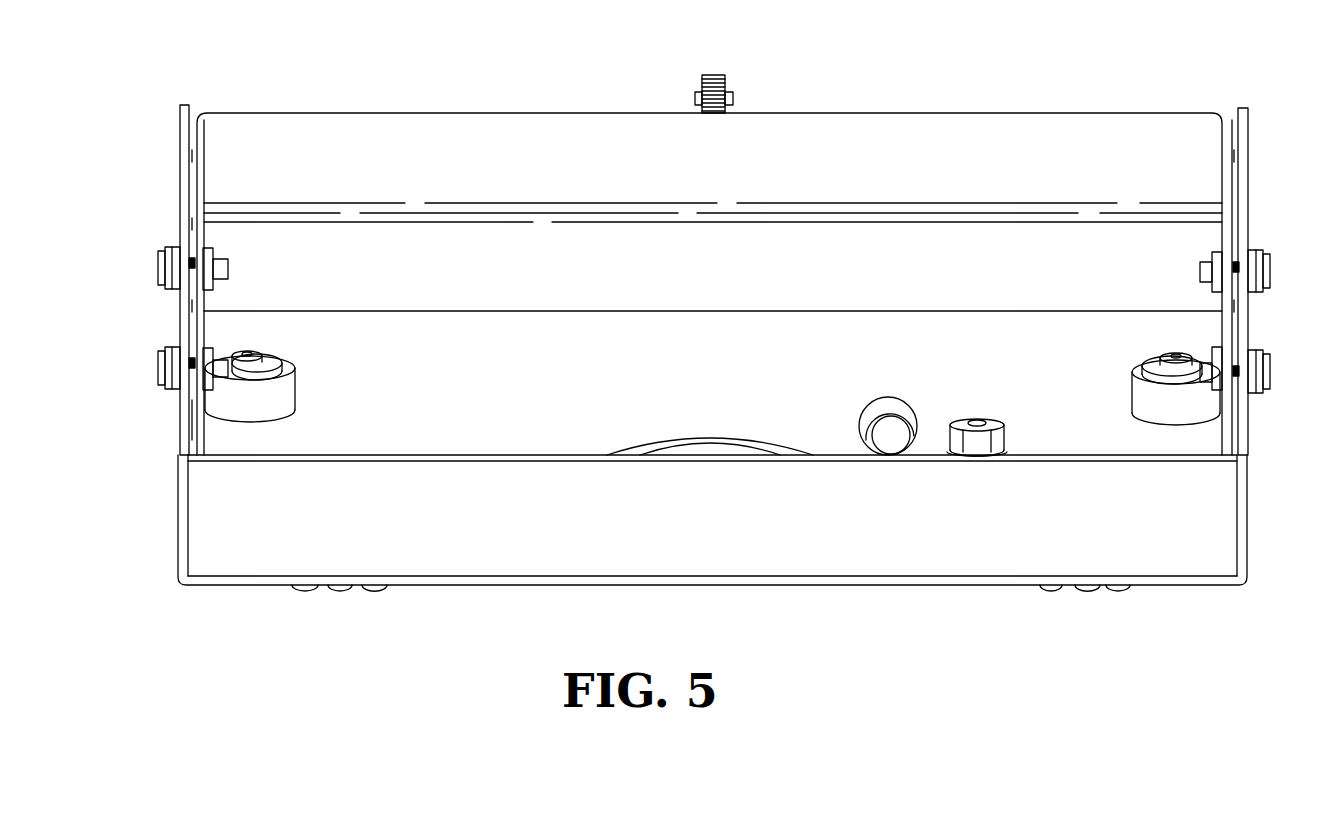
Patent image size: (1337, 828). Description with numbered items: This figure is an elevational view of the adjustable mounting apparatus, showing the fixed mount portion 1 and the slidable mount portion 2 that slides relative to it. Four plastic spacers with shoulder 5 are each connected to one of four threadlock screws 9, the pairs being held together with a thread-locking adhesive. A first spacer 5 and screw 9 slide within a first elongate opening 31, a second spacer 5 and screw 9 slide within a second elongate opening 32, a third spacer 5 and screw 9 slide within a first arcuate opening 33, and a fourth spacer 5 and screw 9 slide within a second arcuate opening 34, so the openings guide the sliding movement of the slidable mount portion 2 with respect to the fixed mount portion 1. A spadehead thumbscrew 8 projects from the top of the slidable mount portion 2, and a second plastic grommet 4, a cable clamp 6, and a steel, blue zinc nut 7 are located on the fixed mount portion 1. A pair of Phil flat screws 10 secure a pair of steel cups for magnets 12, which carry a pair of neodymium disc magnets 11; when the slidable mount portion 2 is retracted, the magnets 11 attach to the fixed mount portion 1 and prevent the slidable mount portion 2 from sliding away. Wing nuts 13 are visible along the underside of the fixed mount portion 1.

The fixed mount portion 1 is at (833, 586).
The slidable mount portion 2 is at (935, 113).
The second plastic grommet 4 is at (710, 438).
The plastic spacers with shoulder 5 is at (208, 250).
The cable clamps 6 is at (882, 400).
The steel, blue zinc nuts 7 is at (995, 421).
The spadehead thumbscrew 8 is at (711, 75).
The threadlock screws 9 is at (160, 266).
The Phil flat screws 10 is at (260, 350).
The neodymium disc magnets 11 is at (245, 405).
The steel cups for magnets 12 is at (283, 395).
The wing nuts 13 is at (370, 588).
The first elongate opening 31 is at (190, 262).
The second elongate opening 32 is at (1237, 268).
The first arcuate opening 33 is at (190, 362).
The second arcuate opening 34 is at (1237, 372).